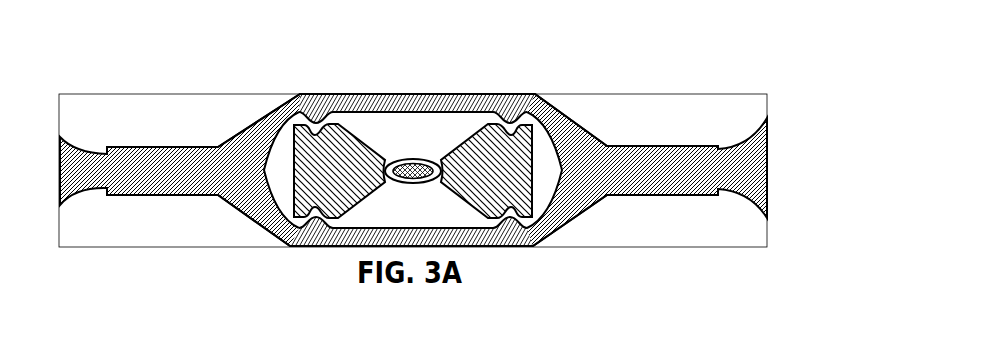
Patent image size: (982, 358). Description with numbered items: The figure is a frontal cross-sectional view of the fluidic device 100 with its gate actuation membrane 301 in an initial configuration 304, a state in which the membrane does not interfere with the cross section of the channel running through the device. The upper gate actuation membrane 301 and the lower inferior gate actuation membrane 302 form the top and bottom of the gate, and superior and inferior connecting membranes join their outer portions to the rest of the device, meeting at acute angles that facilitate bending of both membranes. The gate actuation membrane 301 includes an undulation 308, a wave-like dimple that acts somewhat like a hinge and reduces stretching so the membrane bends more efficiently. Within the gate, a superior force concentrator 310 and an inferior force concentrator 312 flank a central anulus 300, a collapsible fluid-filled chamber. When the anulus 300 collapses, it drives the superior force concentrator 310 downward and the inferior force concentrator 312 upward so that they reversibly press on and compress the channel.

The fluidic device 100 is at (148, 83).
The initial configuration 304 is at (157, 253).
The undulation 308 is at (300, 95).
The superior force concentrator 310 is at (420, 140).
The gate actuation membrane 301 is at (480, 95).
The inferior gate actuation membrane 302 is at (325, 228).
The inferior force concentrator 312 is at (412, 200).
The anulus 300 is at (533, 219).